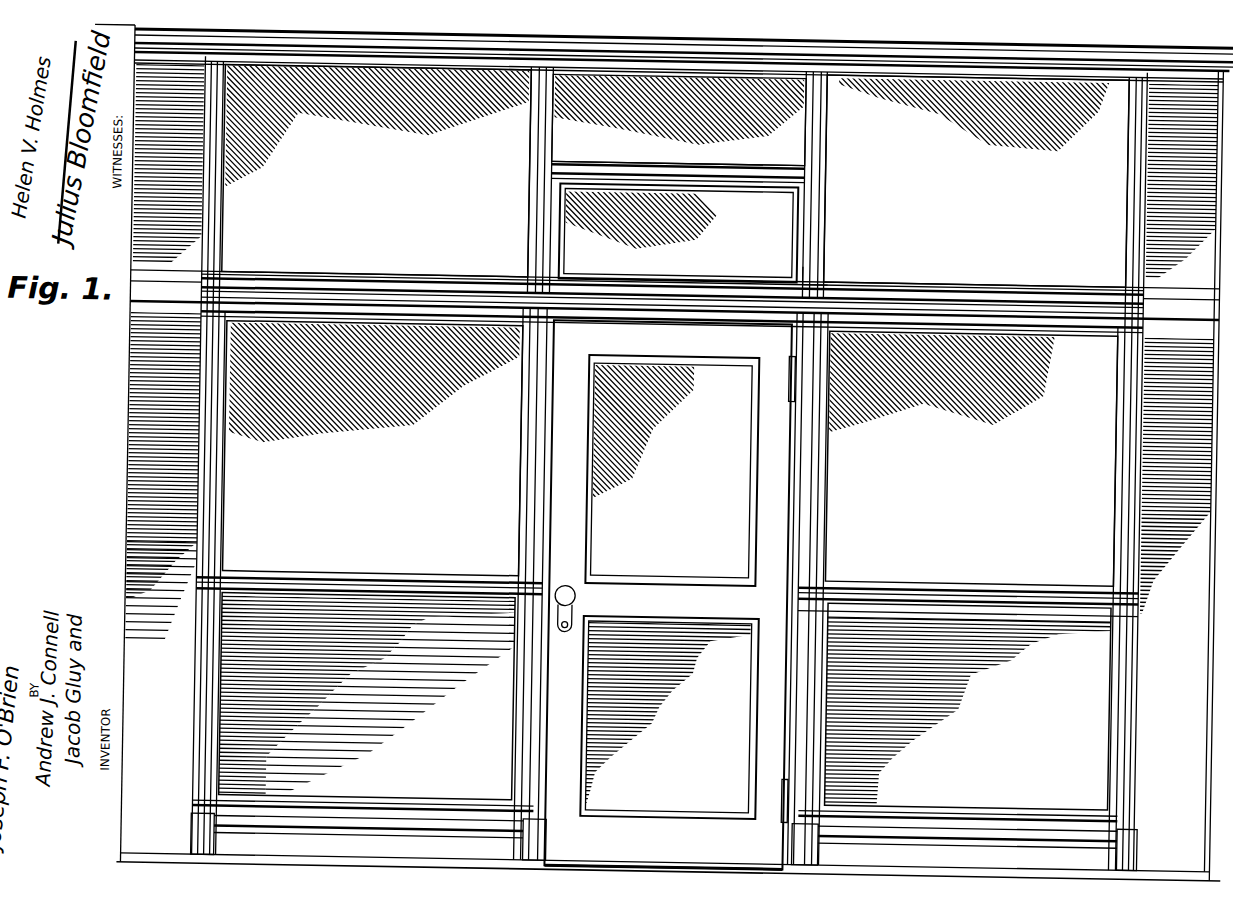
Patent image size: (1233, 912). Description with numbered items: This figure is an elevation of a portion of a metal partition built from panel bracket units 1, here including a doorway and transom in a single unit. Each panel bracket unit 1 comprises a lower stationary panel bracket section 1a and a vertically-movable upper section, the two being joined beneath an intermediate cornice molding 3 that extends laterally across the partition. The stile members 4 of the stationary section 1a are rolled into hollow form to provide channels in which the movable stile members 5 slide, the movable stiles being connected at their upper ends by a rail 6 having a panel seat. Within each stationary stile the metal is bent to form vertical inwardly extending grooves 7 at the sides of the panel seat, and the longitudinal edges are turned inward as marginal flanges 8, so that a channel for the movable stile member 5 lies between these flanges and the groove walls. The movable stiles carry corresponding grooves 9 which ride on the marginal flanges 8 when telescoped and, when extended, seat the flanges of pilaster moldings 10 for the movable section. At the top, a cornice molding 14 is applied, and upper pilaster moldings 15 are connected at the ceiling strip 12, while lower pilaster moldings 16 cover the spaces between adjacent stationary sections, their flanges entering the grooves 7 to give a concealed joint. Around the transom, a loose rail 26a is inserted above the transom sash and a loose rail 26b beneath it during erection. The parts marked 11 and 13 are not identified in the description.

The panel bracket unit 1 is at (668, 565).
The stationary panel bracket section 1a is at (134, 517).
The intermediate cornice molding 3 is at (295, 92).
The stile member 4 is at (372, 75).
The movable stile member 5 is at (227, 251).
The rail 6 is at (983, 62).
The groove 7 is at (682, 189).
The marginal flange 8 is at (719, 264).
The groove 9 is at (723, 559).
The pilaster molding 10 is at (728, 815).
The left pilaster (upper) 11 is at (150, 208).
The ceiling strip 12 is at (524, 210).
The left pilaster (lower) 13 is at (120, 463).
The top cornice molding 14 is at (521, 430).
The pilaster molding 15 is at (215, 188).
The lower pilaster molding 16 is at (137, 247).
The removable or loose rail 26a is at (621, 159).
The loose rail 26b is at (832, 260).